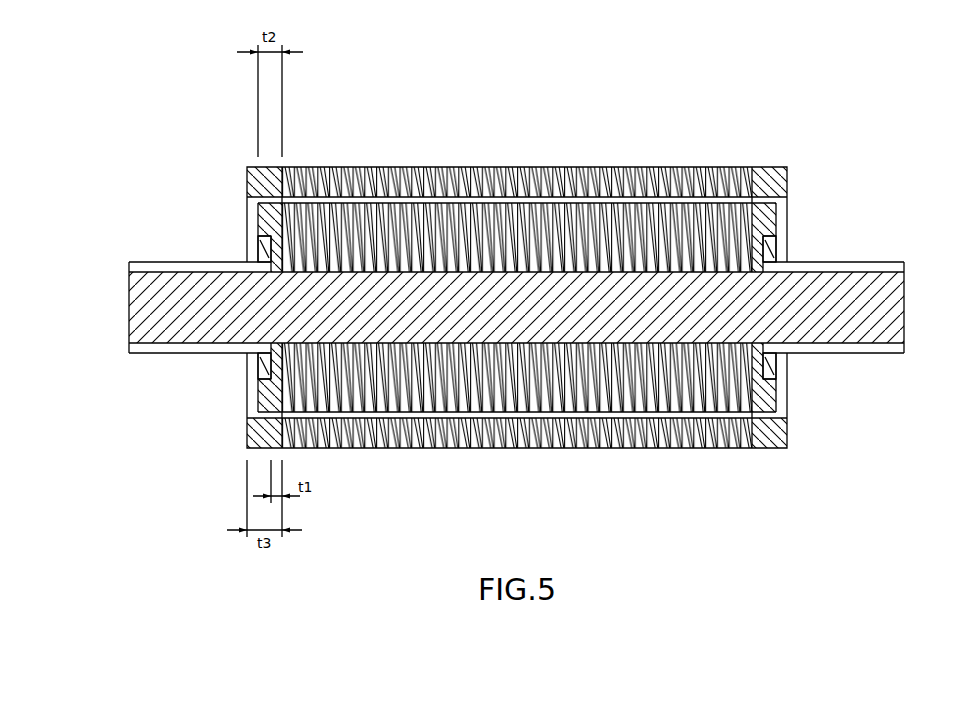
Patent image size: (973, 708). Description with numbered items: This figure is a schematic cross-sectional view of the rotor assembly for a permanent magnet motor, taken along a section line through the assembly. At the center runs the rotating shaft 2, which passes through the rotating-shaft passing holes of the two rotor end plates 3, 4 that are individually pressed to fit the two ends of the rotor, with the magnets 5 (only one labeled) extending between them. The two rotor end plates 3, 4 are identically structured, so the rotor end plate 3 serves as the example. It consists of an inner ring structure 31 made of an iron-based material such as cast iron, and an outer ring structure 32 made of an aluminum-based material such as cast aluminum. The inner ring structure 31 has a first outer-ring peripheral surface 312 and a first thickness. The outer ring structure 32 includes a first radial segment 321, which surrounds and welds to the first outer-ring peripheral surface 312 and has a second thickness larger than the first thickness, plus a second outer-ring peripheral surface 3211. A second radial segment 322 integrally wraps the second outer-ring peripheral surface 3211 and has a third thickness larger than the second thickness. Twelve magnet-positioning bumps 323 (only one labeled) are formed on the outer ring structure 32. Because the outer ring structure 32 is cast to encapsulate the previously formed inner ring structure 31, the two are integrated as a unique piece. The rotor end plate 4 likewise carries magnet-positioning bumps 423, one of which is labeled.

The rotating shaft 2 is at (905, 297).
The rotor end plate 3 is at (323, 275).
The inner ring structure 31 is at (272, 370).
The first outer-ring peripheral surface 312 is at (268, 392).
The outer ring structure 32 is at (237, 195).
The first radial segment 321 is at (262, 249).
The second outer-ring peripheral surface 3211 is at (262, 422).
The second radial segment 322 is at (256, 214).
The magnet-positioning bump 323 is at (283, 195).
The rotor end plate 4 is at (710, 275).
The magnet-positioning bump 423 is at (751, 195).
The magnet 5 is at (482, 166).